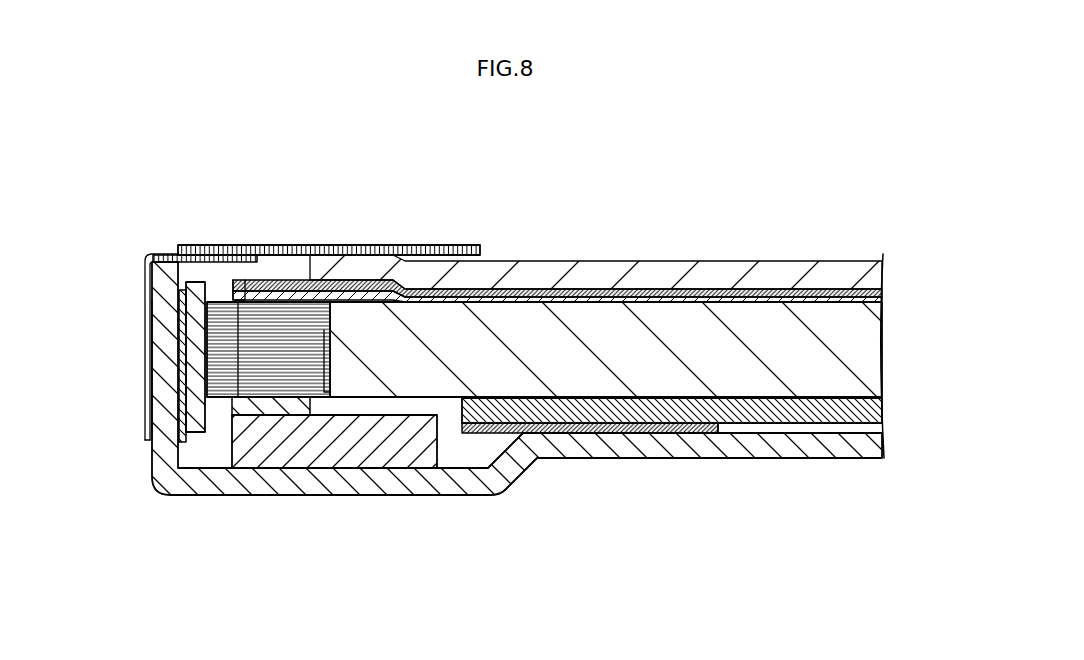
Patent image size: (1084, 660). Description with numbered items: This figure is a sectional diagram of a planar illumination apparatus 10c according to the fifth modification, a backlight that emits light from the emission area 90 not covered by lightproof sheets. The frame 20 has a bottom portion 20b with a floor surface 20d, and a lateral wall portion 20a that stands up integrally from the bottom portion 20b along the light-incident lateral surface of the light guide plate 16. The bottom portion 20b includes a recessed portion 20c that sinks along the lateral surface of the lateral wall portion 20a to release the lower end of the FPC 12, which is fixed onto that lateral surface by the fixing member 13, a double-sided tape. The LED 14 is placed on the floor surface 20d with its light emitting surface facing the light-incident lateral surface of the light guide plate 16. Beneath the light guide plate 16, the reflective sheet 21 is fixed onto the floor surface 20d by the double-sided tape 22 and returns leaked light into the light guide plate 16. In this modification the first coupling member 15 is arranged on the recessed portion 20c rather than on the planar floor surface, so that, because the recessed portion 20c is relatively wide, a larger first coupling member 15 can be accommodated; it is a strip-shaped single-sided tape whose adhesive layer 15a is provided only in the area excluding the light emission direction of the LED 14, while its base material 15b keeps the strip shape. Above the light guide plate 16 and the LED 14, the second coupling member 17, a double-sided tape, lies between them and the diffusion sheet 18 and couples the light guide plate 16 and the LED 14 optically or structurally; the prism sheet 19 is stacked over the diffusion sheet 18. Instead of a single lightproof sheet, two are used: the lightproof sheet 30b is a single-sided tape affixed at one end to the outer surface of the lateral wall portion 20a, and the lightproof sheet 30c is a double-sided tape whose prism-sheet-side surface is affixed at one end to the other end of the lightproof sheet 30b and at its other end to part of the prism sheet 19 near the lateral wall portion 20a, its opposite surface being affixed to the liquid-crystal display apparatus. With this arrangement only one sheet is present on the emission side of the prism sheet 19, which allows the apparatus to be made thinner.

The planar illumination apparatus 10c is at (726, 199).
The emission area 90 is at (601, 239).
The lightproof sheet 30b is at (145, 260).
The lightproof sheet 30c is at (350, 253).
The frame 20 is at (166, 282).
The lateral wall portion 20a is at (178, 472).
The bottom portion 20b is at (740, 447).
The recessed portion 20c is at (532, 474).
The floor surface 20d is at (488, 447).
The second coupling member 17 is at (227, 298).
The prism sheet 19 is at (873, 270).
The diffusion sheet 18 is at (873, 292).
The light guide plate 16 is at (873, 345).
The reflective sheet 21 is at (873, 410).
The double-sided tape 22 is at (513, 424).
The fixing member 13 is at (183, 443).
The FPC 12 is at (198, 434).
The LED 14 is at (213, 395).
The first coupling member 15 is at (323, 452).
The adhesive layer 15a is at (232, 403).
The base material 15b is at (440, 437).